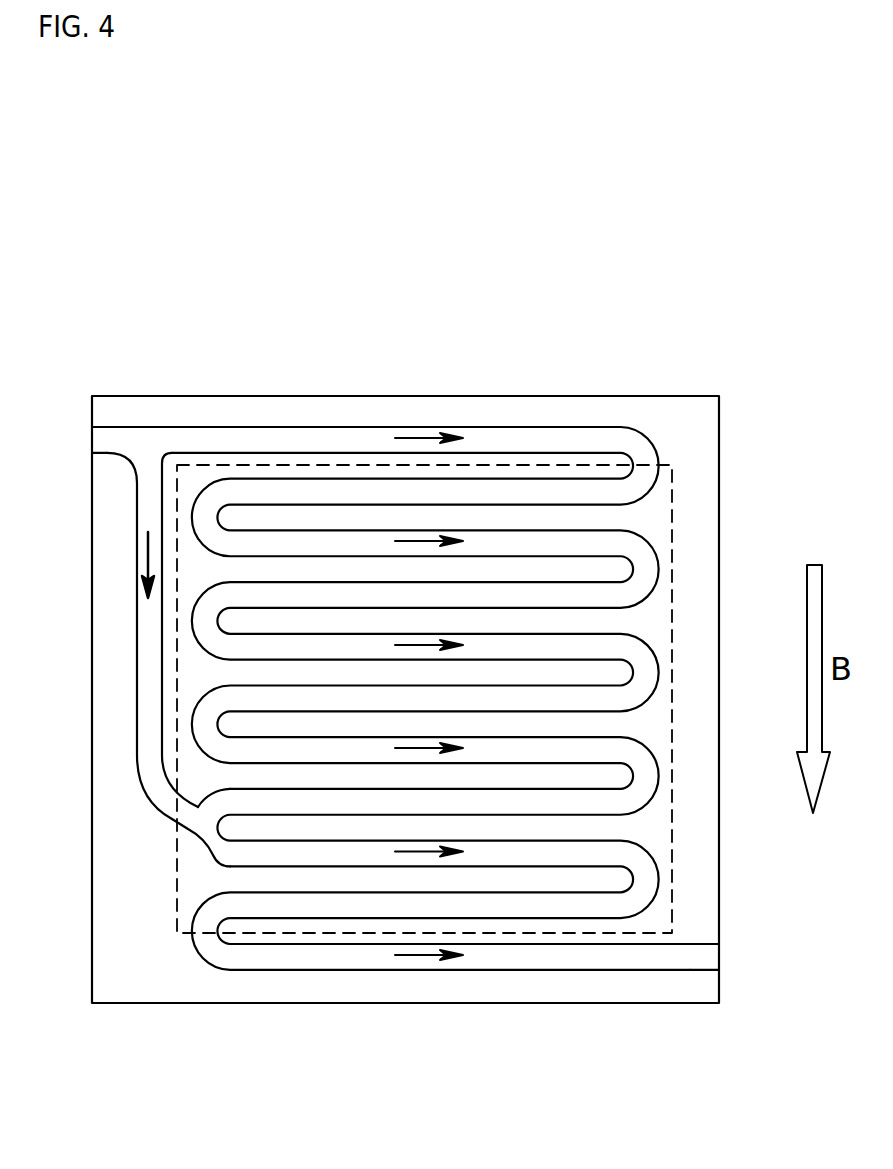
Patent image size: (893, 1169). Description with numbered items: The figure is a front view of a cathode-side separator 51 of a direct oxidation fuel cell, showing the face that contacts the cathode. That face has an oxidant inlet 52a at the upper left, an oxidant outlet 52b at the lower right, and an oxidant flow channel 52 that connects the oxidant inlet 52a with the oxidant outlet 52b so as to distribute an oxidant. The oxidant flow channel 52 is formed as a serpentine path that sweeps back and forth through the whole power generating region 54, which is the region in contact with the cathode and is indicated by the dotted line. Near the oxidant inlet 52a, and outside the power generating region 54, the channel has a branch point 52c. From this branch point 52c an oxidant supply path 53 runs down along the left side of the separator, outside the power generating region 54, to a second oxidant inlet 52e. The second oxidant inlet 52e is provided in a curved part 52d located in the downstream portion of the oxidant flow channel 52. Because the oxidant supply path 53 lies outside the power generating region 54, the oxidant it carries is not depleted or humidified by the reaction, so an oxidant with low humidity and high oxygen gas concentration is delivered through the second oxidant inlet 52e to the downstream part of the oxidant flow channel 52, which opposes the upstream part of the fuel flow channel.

The cathode-side separator 51 is at (685, 412).
The oxidant flow channel 52 is at (636, 538).
The oxidant inlet 52a is at (100, 438).
The oxidant outlet 52b is at (702, 960).
The branch point 52c is at (140, 462).
The curved part 52d is at (205, 840).
The second oxidant inlet 52e is at (190, 812).
The oxidant supply path 53 is at (140, 625).
The power generating region 54 is at (672, 600).